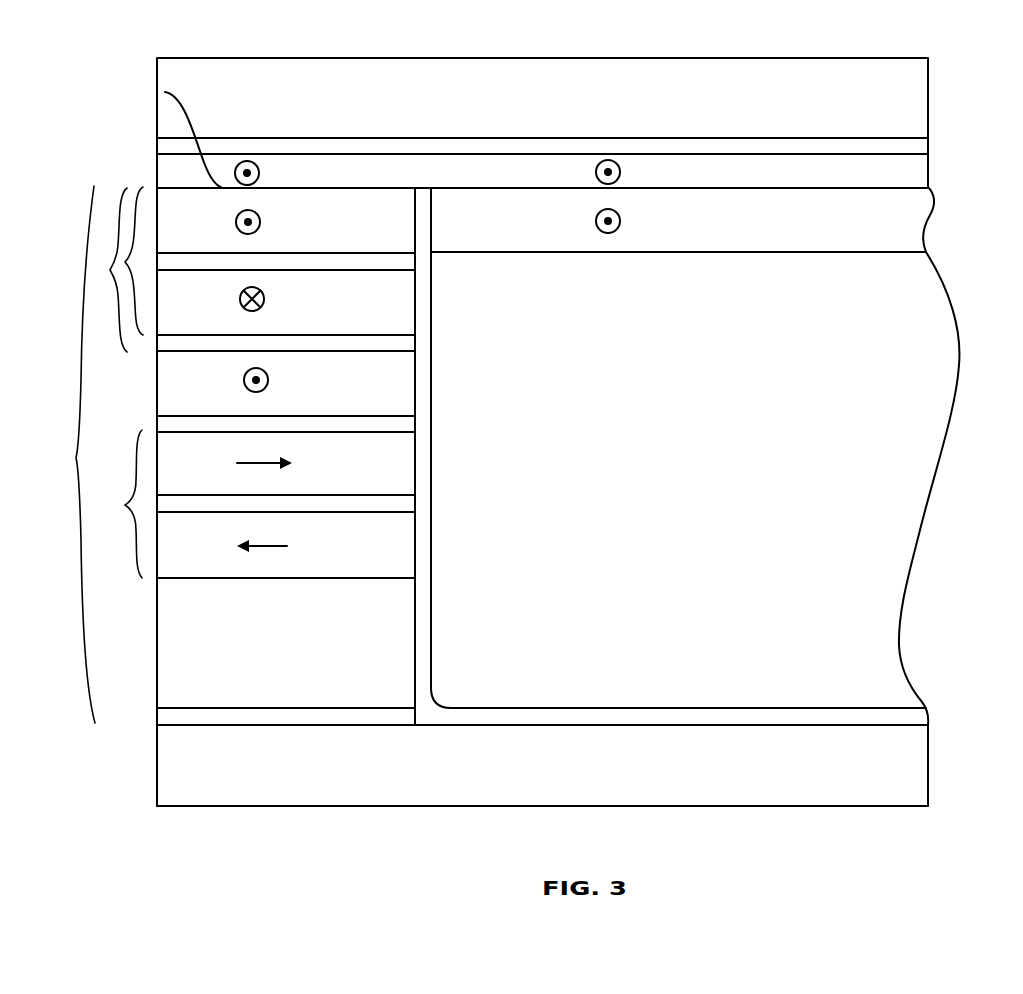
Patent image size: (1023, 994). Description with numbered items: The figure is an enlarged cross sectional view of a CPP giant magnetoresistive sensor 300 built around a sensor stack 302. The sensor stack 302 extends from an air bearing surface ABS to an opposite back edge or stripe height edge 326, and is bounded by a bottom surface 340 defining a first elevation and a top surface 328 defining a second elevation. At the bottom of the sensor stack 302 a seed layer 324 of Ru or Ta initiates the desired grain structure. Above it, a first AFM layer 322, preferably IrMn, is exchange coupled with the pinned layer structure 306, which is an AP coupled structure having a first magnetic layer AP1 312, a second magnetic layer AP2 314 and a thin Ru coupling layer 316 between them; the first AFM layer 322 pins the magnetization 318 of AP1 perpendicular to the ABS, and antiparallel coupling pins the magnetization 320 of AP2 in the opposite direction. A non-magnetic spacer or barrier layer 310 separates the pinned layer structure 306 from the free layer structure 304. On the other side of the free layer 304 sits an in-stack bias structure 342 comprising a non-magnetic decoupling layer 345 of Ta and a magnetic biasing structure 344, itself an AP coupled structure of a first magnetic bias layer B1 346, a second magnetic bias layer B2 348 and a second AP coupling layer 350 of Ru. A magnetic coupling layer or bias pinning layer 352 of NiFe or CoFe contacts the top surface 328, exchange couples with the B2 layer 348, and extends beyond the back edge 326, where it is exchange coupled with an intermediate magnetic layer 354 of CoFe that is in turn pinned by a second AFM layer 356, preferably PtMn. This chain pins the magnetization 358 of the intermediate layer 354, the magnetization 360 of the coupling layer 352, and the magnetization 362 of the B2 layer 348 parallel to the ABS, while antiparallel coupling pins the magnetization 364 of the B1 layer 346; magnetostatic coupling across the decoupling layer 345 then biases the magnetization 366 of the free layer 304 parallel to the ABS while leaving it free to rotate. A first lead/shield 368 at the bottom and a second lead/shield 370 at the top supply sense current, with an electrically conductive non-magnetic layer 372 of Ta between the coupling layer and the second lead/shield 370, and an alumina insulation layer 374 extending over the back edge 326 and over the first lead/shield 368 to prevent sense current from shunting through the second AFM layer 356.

The CPP giant magnetoresistive sensor 300 is at (903, 47).
The sensor stack 302 is at (84, 212).
The free layer structure 304 is at (392, 385).
The pinned layer structure 306 is at (137, 446).
The non-magnetic spacer or barrier layer 310 is at (392, 426).
The first magnetic layer AP1 312 is at (392, 548).
The second magnetic layer AP2 314 is at (392, 464).
The non-magnetic coupling layer 316 is at (392, 506).
The magnetization of AP1 layer 318 is at (265, 546).
The magnetization of AP2 layer 320 is at (254, 462).
The first AFM layer 322 is at (315, 640).
The seed layer 324 is at (340, 720).
The back edge or stripe height edge 326 is at (415, 593).
The top surface 328 is at (165, 92).
The bottom surface 340 is at (193, 727).
The in-stack bias structure 342 is at (127, 190).
The magnetic biasing structure 344 is at (143, 188).
The non-magnetic decoupling layer 345 is at (392, 346).
The first magnetic bias layer B1 346 is at (392, 305).
The second magnetic bias layer B2 348 is at (392, 216).
The second AP coupling layer 350 is at (392, 267).
The magnetic coupling layer or bias pinning layer 352 is at (770, 170).
The intermediate magnetic layer 354 is at (768, 218).
The second AFM layer 356 is at (785, 431).
The magnetization of intermediate layer 358 is at (620, 221).
The magnetization of coupling layer 360 is at (259, 173).
The magnetization of B2 layer 362 is at (260, 222).
The magnetization of B1 layer 364 is at (264, 300).
The magnetization of free layer 366 is at (268, 381).
The first electrically conductive lead/shield 368 is at (480, 757).
The second electrically conductive lead/shield 370 is at (612, 105).
The electrically conductive non-magnetic layer 372 is at (750, 147).
The insulation layer 374 is at (423, 640).
The air bearing surface ABS is at (157, 642).